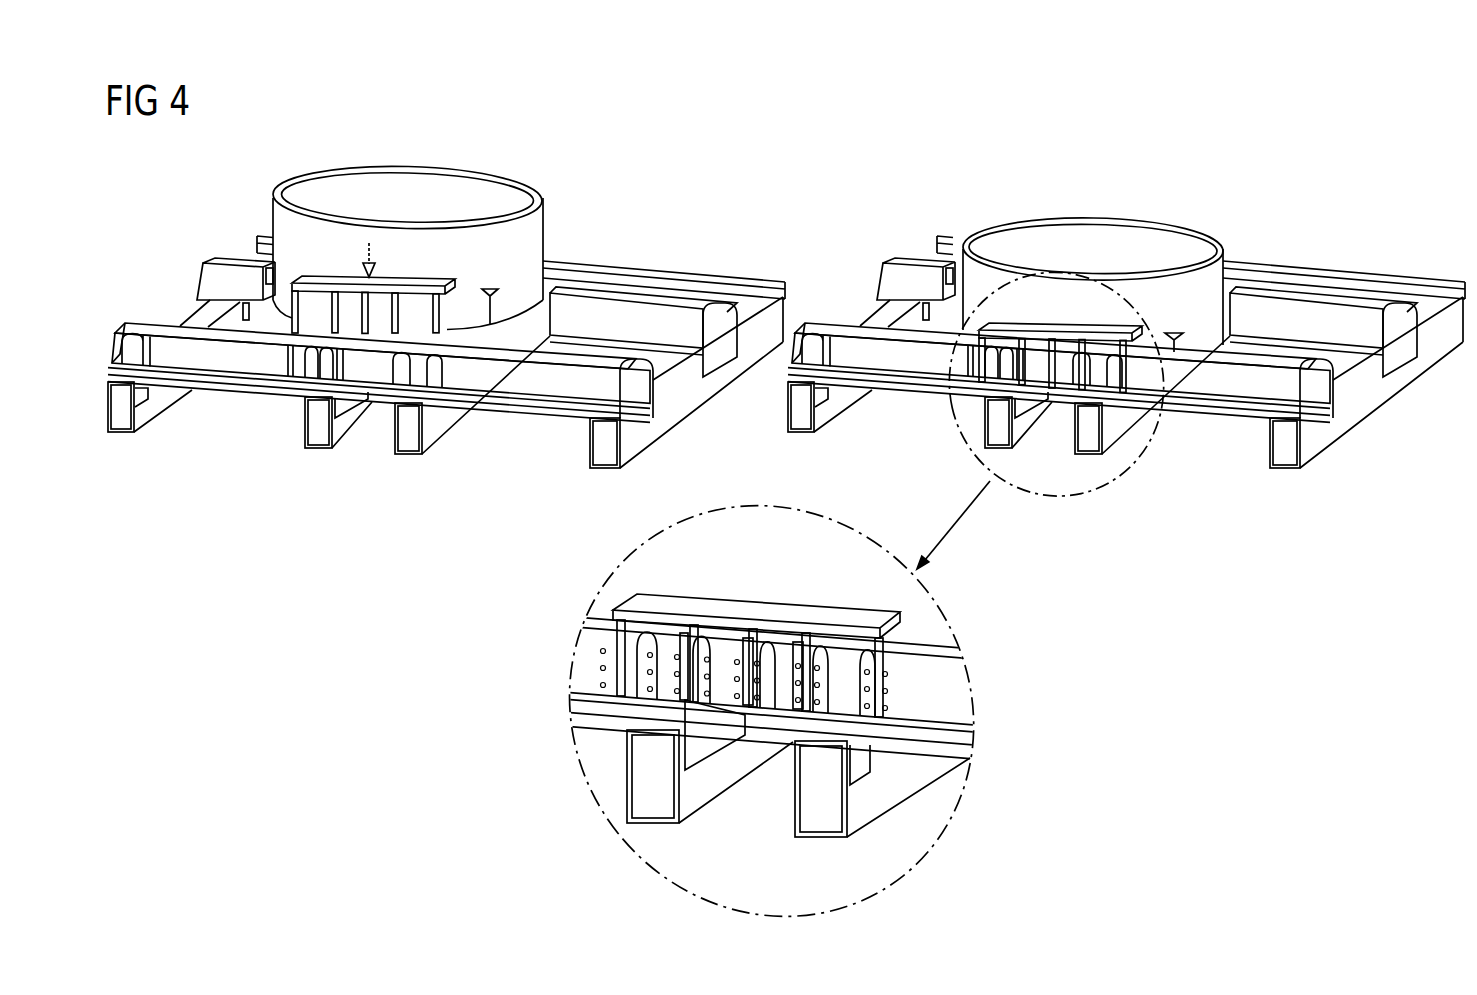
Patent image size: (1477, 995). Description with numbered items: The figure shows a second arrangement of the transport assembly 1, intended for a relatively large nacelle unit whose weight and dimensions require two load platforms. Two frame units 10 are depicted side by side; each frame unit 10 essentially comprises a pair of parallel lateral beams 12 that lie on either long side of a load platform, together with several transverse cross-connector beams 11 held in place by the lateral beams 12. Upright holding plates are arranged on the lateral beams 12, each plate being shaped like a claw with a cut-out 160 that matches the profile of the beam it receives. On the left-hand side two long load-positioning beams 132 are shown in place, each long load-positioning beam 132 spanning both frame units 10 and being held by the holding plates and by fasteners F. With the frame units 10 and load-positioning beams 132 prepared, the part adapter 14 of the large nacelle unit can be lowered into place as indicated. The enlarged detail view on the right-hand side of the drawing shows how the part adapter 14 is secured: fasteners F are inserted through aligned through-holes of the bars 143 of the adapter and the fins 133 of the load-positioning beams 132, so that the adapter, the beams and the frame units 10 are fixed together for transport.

The transport assembly 1 is at (786, 398).
The frame unit 10 is at (786, 363).
The cross-connector beam 11 is at (786, 342).
The lateral beam 12 is at (785, 382).
The part adapter 14 is at (747, 230).
The long load-positioning beam 132 is at (764, 307).
The fin 133 is at (717, 496).
The bar 143 is at (753, 644).
The cut-out 160 is at (734, 757).
The fastener F is at (750, 664).